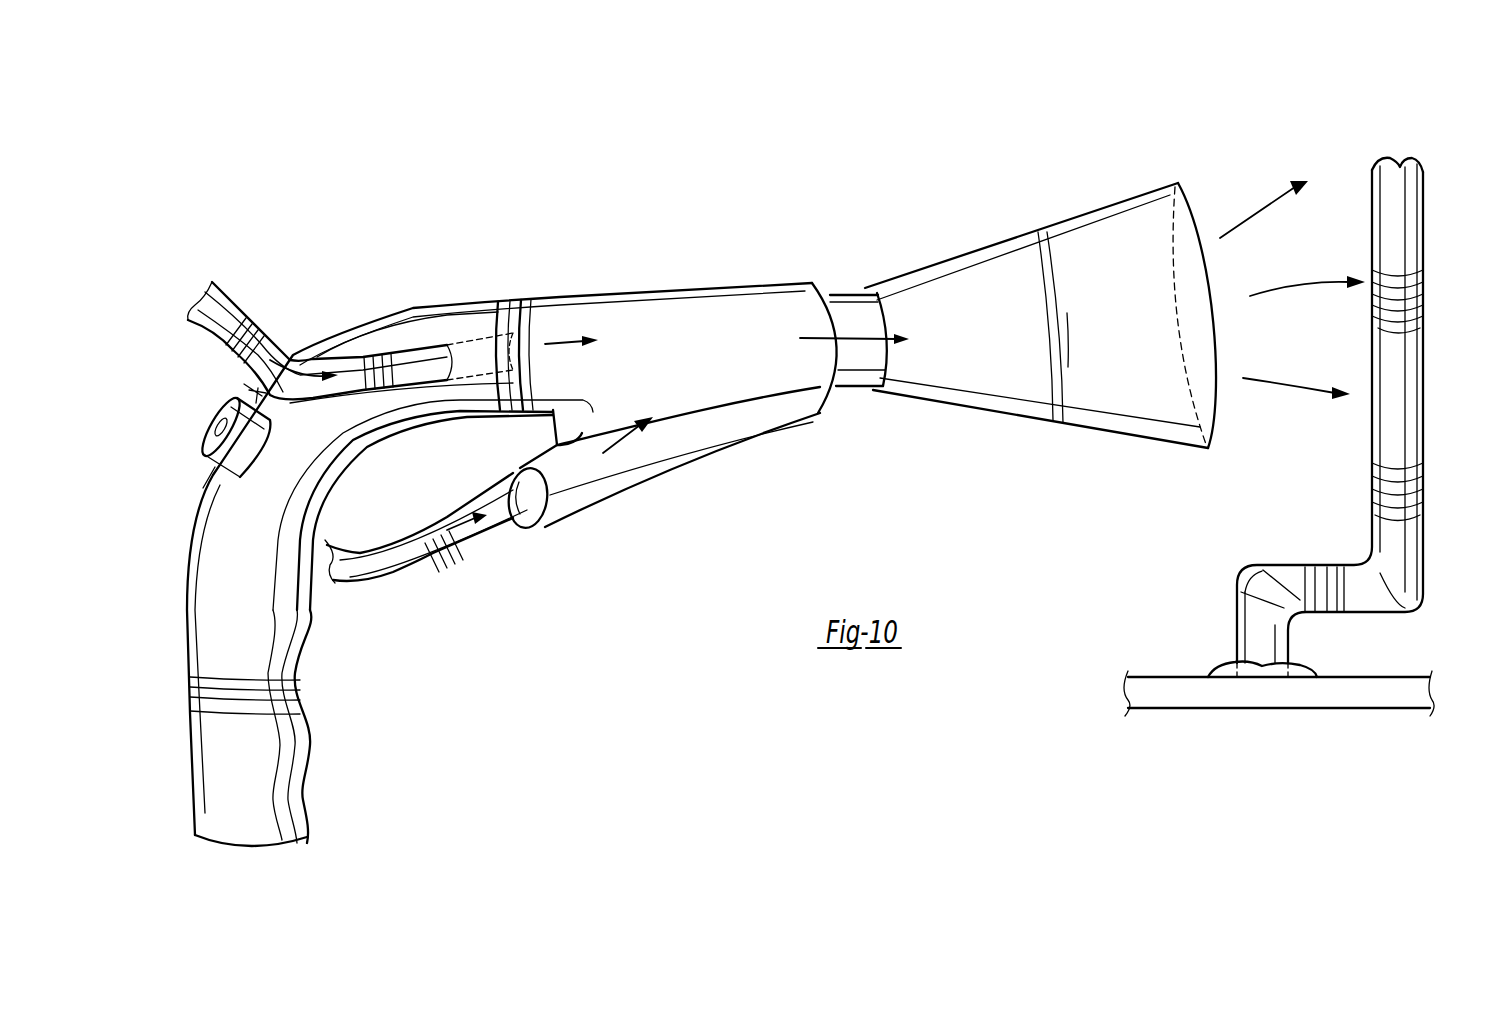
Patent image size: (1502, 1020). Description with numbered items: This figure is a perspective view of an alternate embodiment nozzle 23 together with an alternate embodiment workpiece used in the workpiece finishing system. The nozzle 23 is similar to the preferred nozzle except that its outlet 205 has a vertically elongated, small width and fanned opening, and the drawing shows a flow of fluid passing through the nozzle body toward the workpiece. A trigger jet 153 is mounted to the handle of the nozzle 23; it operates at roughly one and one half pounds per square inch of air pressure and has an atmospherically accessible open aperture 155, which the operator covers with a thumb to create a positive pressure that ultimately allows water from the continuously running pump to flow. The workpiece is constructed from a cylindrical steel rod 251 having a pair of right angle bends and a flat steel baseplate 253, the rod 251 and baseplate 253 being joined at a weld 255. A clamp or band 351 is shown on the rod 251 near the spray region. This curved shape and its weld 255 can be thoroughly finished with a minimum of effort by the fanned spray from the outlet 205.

The nozzle 23 is at (571, 312).
The outlet 205 is at (1038, 235).
The cylindrical steel rod 251 is at (1393, 207).
The tube clamp band 351 is at (1405, 470).
The weld 255 is at (1225, 668).
The flat steel baseplate 253 is at (1190, 695).
The trigger jet 153 is at (211, 405).
The open aperture 155 is at (215, 428).